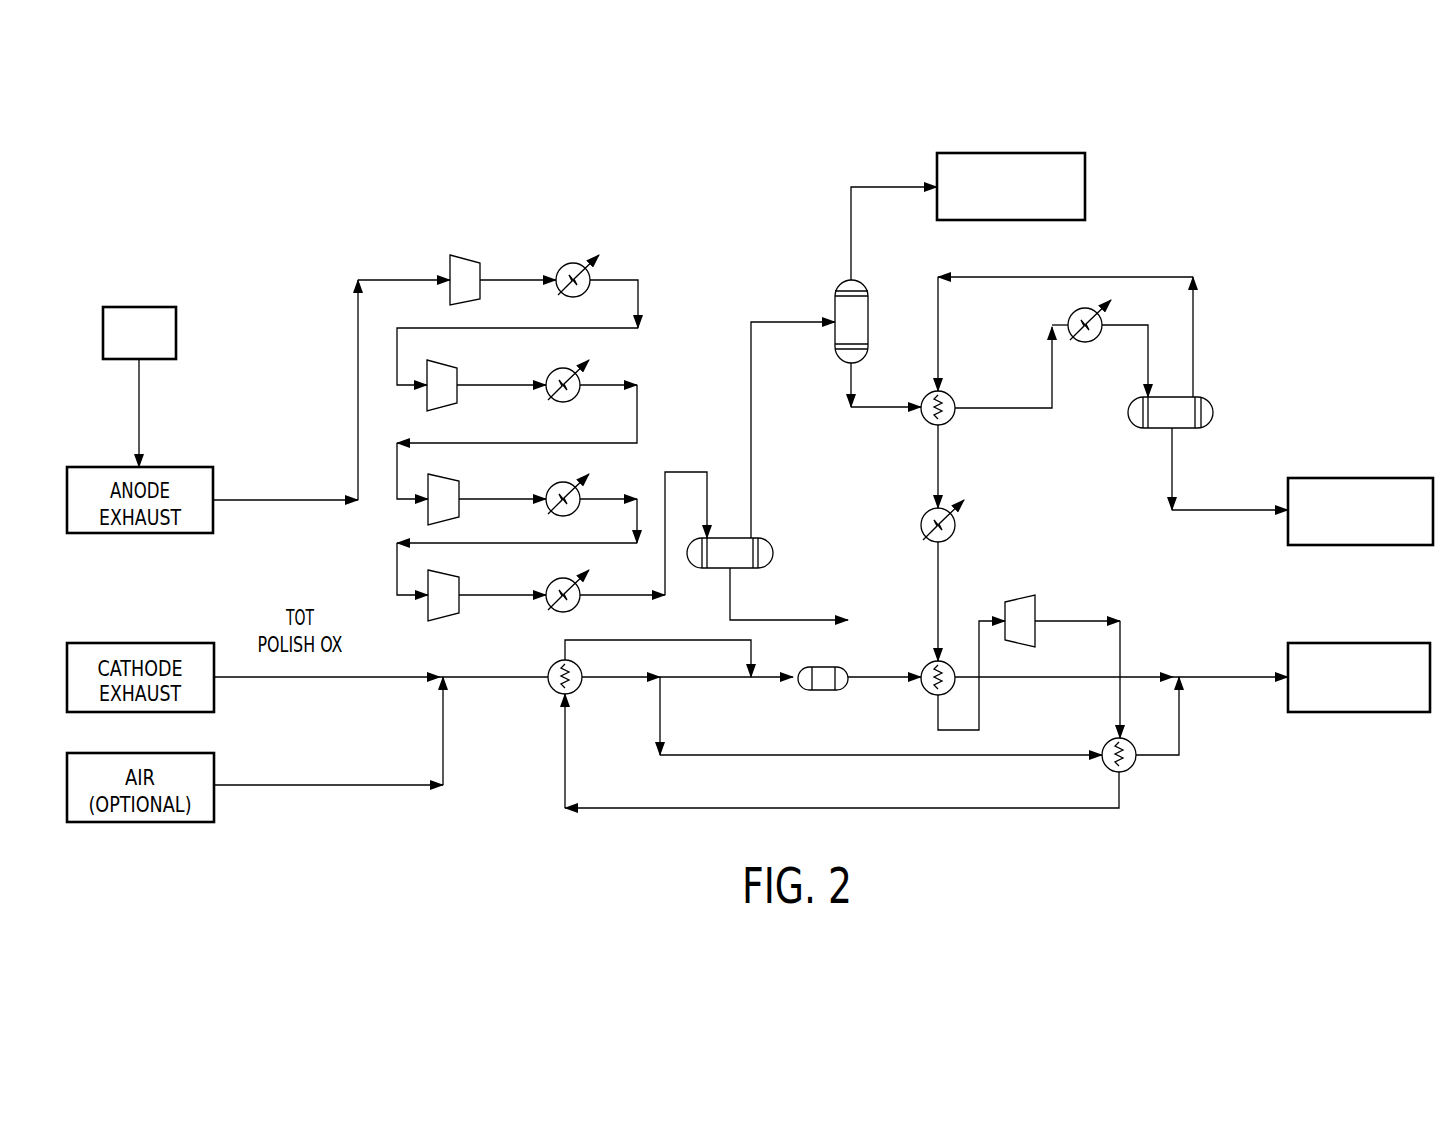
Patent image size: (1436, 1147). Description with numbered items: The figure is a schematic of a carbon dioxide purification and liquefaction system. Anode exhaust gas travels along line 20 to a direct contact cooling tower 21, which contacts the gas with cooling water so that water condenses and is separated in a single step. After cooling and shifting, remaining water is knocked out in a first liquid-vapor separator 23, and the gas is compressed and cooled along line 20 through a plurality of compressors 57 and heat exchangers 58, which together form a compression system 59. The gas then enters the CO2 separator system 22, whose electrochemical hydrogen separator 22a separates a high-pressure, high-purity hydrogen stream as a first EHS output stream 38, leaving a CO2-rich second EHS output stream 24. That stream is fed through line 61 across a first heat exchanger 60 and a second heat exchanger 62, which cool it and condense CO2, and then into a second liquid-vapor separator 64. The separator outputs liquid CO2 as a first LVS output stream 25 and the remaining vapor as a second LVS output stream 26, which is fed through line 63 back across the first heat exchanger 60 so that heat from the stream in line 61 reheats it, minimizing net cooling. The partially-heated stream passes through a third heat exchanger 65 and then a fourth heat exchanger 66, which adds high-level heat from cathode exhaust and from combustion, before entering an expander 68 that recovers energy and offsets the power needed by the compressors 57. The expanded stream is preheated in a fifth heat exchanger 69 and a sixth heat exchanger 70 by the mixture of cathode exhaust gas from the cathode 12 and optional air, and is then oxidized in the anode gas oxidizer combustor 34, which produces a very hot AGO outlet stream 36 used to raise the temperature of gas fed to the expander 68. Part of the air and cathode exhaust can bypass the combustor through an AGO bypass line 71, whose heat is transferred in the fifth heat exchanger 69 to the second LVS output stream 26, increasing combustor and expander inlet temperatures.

The cathode 12 is at (1365, 712).
The line 20 is at (358, 300).
The direct contact cooling tower 21 is at (153, 307).
The CO2 separator system 22 is at (1129, 362).
The electrochemical hydrogen separator 22a is at (862, 282).
The first liquid-vapor separator 23 is at (733, 548).
The second EHS output stream 24 is at (887, 420).
The first LVS output stream 25 is at (1208, 515).
The second LVS output stream 26 is at (1198, 365).
The anode gas oxidizer combustor 34 is at (823, 689).
The AGO outlet stream 36 is at (857, 683).
The first EHS output stream 38 is at (858, 268).
The compressors 57 is at (457, 288).
The heat exchangers 58 is at (573, 297).
The compression system 59 is at (534, 395).
The first heat exchanger 60 is at (950, 394).
The line 61 is at (1052, 392).
The second heat exchanger 62 is at (1075, 310).
The line 63 is at (1134, 277).
The second liquid-vapor separator 64 is at (1180, 418).
The third heat exchanger 65 is at (956, 533).
The fourth heat exchanger 66 is at (922, 695).
The expander 68 is at (1025, 630).
The fifth heat exchanger 69 is at (1133, 768).
The sixth heat exchanger 70 is at (550, 690).
The AGO bypass line 71 is at (940, 757).